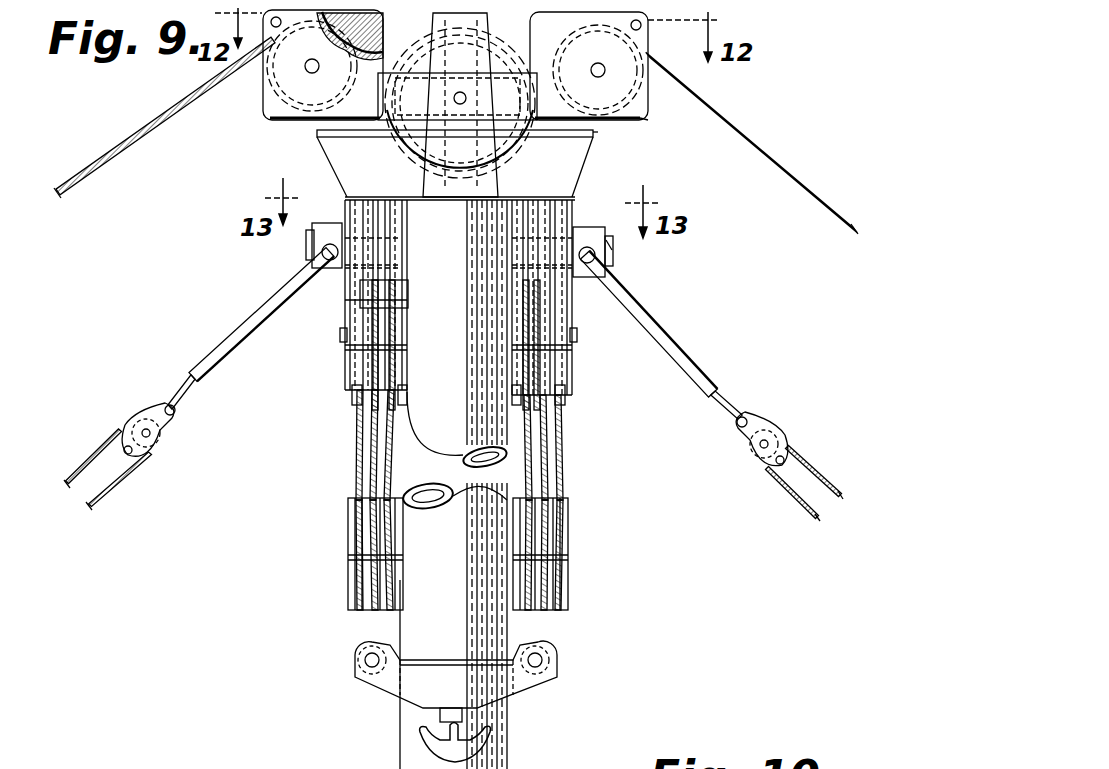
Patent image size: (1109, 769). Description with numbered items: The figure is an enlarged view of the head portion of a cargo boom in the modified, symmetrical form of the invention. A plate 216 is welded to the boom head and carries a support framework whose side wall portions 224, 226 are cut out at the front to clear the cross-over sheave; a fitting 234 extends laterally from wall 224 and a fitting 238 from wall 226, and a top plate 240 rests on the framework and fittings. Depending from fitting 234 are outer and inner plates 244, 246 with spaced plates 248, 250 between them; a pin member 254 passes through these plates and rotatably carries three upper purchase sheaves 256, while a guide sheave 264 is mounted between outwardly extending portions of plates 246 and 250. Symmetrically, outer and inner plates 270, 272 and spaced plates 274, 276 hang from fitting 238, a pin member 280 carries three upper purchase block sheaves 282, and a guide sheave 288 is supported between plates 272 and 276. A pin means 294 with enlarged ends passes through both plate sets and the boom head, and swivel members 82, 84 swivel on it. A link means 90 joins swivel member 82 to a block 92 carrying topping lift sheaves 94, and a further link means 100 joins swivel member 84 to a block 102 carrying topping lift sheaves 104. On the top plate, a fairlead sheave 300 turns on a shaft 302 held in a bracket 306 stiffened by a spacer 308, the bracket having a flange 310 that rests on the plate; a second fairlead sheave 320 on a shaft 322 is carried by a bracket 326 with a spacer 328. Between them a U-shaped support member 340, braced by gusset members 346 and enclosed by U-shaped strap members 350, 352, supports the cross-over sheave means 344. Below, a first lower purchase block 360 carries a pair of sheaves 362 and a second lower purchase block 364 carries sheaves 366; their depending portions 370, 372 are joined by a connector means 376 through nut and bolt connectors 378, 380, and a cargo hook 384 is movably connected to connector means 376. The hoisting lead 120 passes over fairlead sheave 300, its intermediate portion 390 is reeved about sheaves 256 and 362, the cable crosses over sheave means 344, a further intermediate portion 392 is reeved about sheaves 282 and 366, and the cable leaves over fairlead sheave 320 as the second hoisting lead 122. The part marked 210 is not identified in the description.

The hoisting lead 120 is at (100, 175).
The hoisting lead 122 is at (762, 128).
The fairlead sheave 300 is at (272, 112).
The shaft 302 is at (305, 70).
The bracket 306 is at (255, 82).
The spacer 308 is at (280, 48).
The outwardly extending flange 310 is at (320, 135).
The fairlead sheave 320 is at (648, 104).
The shaft 322 is at (598, 70).
The bracket 326 is at (650, 124).
The spacer 328 is at (652, 46).
The support member 340 is at (482, 56).
The cross-over sheave means 344 is at (508, 50).
The gusset members 346 is at (460, 103).
The U-shaped strap member 350 is at (457, 96).
The U-shaped strap member 352 is at (500, 108).
The fitting 234 is at (325, 153).
The fitting 238 is at (585, 162).
The top plate 240 is at (600, 134).
The plate 216 is at (447, 198).
The side wall portion 224 is at (425, 200).
The side wall portion 226 is at (500, 205).
The guide sheave 264 is at (418, 262).
The guide sheave 288 is at (520, 265).
The upper purchase sheaves 256 is at (385, 308).
The inner plate 246 is at (405, 322).
The pin member 254 is at (340, 333).
The outer plate 244 is at (345, 350).
The spaced plate 248 is at (355, 395).
The spaced plate 250 is at (365, 400).
The intermediate portion of the cargo fall cable 390 is at (345, 450).
The further intermediate portion of the cargo fall cable 392 is at (580, 460).
The inner plate 272 is at (512, 362).
The pin member 280 is at (578, 337).
The outer plate 270 is at (575, 357).
The upper purchase block sheaves 282 is at (560, 378).
The spaced plate 274 is at (560, 398).
The spaced plate 276 is at (545, 405).
The lift shaft 210 is at (520, 720).
The first lower purchase block 360 is at (350, 527).
The sheaves 362 is at (365, 600).
The second lower purchase block 364 is at (568, 530).
The sheaves 366 is at (555, 600).
The portion 370 is at (360, 650).
The portion 372 is at (558, 650).
The connector means 376 is at (392, 700).
The connector means 378 is at (545, 668).
The connector means 380 is at (365, 668).
The cargo hook 384 is at (420, 748).
The swivel member 82 is at (330, 222).
The swivel member 84 is at (586, 232).
The pin means 294 is at (612, 248).
The link means 90 is at (240, 322).
The block 92 is at (148, 412).
The topping lift sheaves 94 is at (135, 476).
The link means 100 is at (673, 330).
The block 102 is at (770, 422).
The topping lift sheaves 104 is at (752, 460).